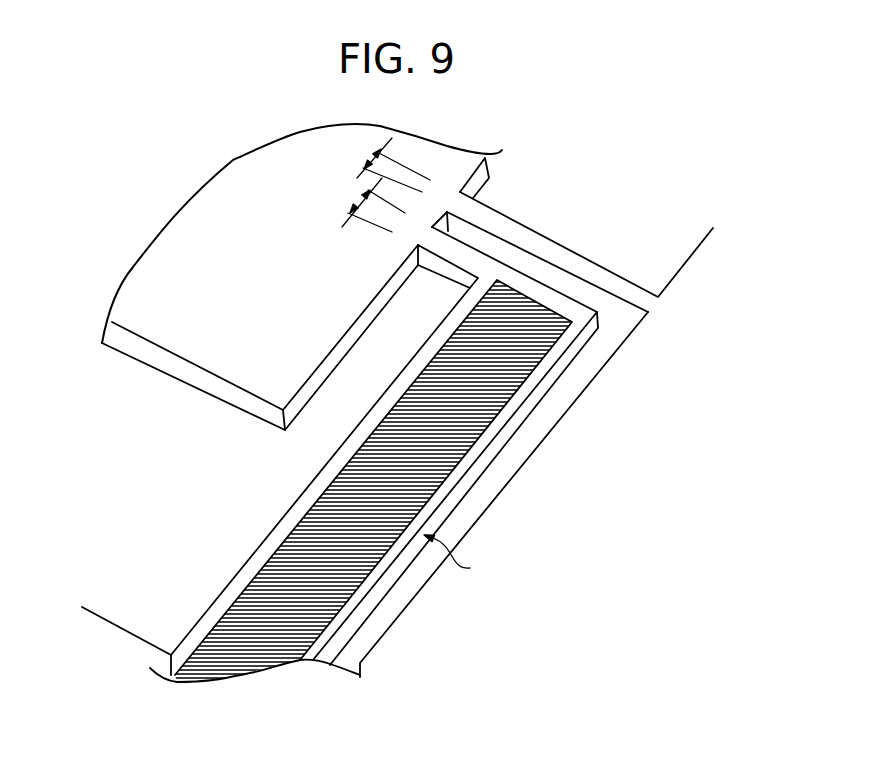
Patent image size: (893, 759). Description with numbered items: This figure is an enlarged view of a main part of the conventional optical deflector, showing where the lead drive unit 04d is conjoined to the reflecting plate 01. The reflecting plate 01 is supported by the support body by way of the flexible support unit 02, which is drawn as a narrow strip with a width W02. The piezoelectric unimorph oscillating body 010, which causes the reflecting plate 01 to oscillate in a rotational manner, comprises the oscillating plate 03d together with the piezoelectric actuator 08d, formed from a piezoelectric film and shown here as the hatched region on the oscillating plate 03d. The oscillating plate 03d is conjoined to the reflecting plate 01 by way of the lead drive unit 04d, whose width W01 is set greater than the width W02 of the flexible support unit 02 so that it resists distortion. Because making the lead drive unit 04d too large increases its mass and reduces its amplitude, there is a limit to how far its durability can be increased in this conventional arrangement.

The reflecting plate 01 is at (197, 378).
The flexible support unit 02 is at (580, 265).
The oscillating plate 03d is at (472, 483).
The lead drive unit 04d is at (455, 268).
The piezoelectric actuator 08d is at (345, 587).
The piezoelectric unimorph oscillating body 010 is at (463, 558).
The width of lead drive unit W01 is at (362, 197).
The width of flexible support body W02 is at (377, 155).